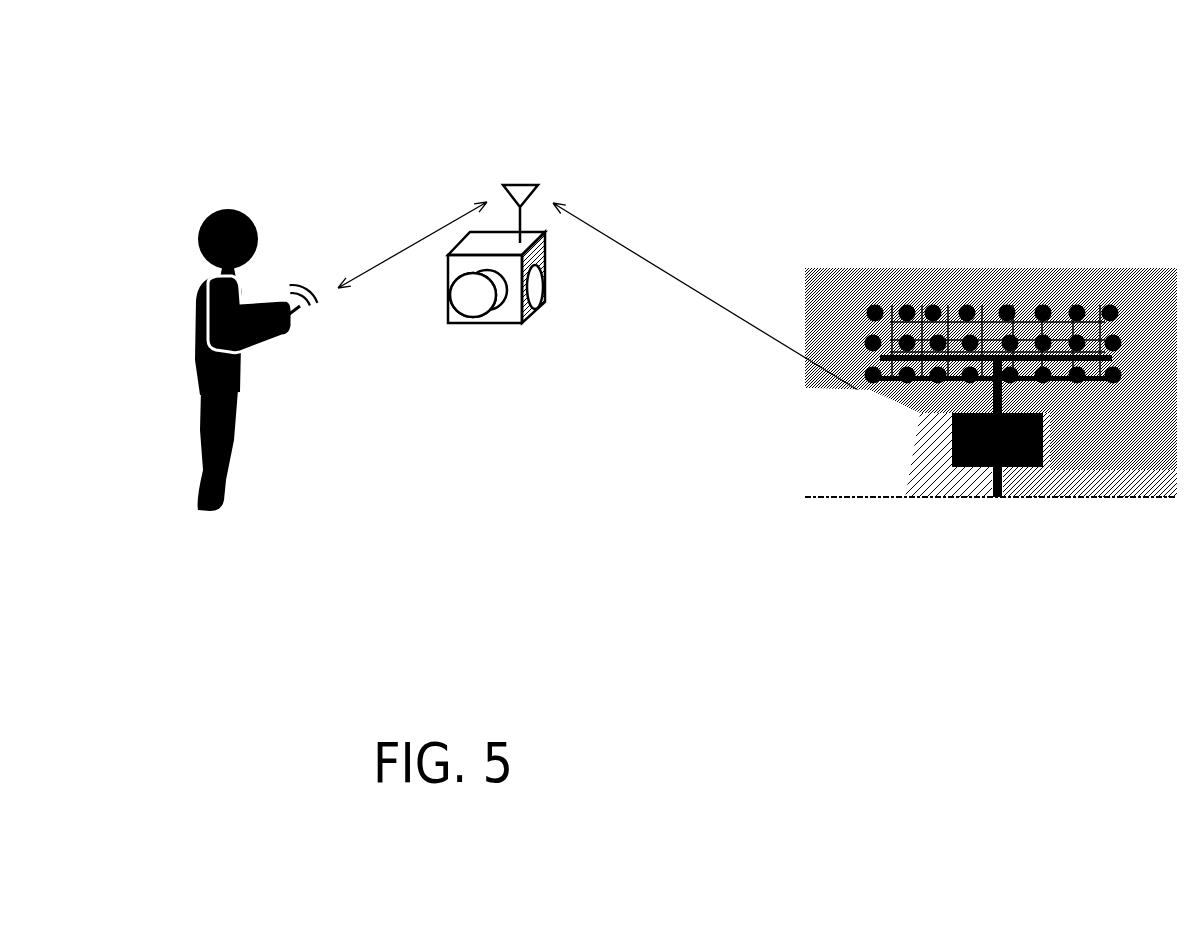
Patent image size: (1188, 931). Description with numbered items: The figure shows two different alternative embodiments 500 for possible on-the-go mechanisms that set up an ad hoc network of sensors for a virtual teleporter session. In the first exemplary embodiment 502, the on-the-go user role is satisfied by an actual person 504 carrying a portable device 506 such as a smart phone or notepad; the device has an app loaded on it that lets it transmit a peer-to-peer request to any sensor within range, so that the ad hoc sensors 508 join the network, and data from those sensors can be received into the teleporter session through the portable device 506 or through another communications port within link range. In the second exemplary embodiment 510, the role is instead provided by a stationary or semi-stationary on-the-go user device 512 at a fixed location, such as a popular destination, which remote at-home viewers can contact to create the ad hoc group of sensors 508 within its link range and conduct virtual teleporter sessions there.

The alternative embodiments 500 is at (850, 78).
The first exemplary embodiment 502 is at (294, 136).
The actual person 504 is at (237, 433).
The portable device 506 is at (297, 317).
The ad hoc sensors 508 is at (513, 327).
The second exemplary embodiment 510 is at (766, 282).
The stationary on-the-go user device 512 is at (950, 463).